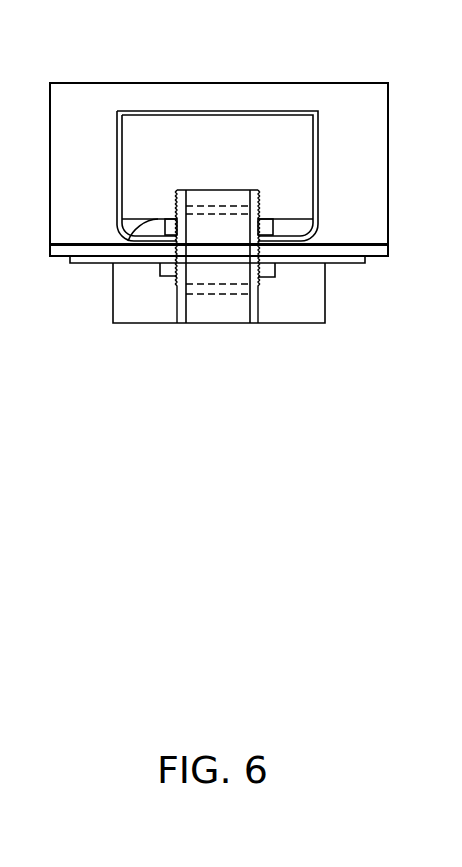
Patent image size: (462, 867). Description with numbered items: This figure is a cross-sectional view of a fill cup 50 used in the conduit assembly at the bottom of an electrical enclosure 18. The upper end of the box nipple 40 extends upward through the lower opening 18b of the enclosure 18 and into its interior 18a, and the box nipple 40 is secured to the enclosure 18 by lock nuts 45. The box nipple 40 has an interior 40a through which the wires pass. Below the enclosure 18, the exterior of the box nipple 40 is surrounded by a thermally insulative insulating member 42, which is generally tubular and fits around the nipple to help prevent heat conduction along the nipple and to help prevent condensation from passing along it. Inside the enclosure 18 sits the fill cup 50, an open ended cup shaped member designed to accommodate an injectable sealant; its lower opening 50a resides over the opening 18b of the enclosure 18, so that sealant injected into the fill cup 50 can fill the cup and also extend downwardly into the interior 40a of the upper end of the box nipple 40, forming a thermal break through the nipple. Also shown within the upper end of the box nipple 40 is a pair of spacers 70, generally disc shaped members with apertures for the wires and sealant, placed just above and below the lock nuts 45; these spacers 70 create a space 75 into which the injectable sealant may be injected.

The electrical enclosure 18 is at (375, 124).
The interior 18a is at (343, 97).
The lower opening 18b is at (278, 273).
The fill cup 50 is at (320, 174).
The lower opening 50a is at (163, 217).
The lock nuts 45 is at (130, 240).
The insulating member 42 is at (318, 314).
The box nipple 40 is at (250, 314).
The interior 40a is at (203, 314).
The spacers 70 is at (212, 210).
The space 75 is at (246, 218).